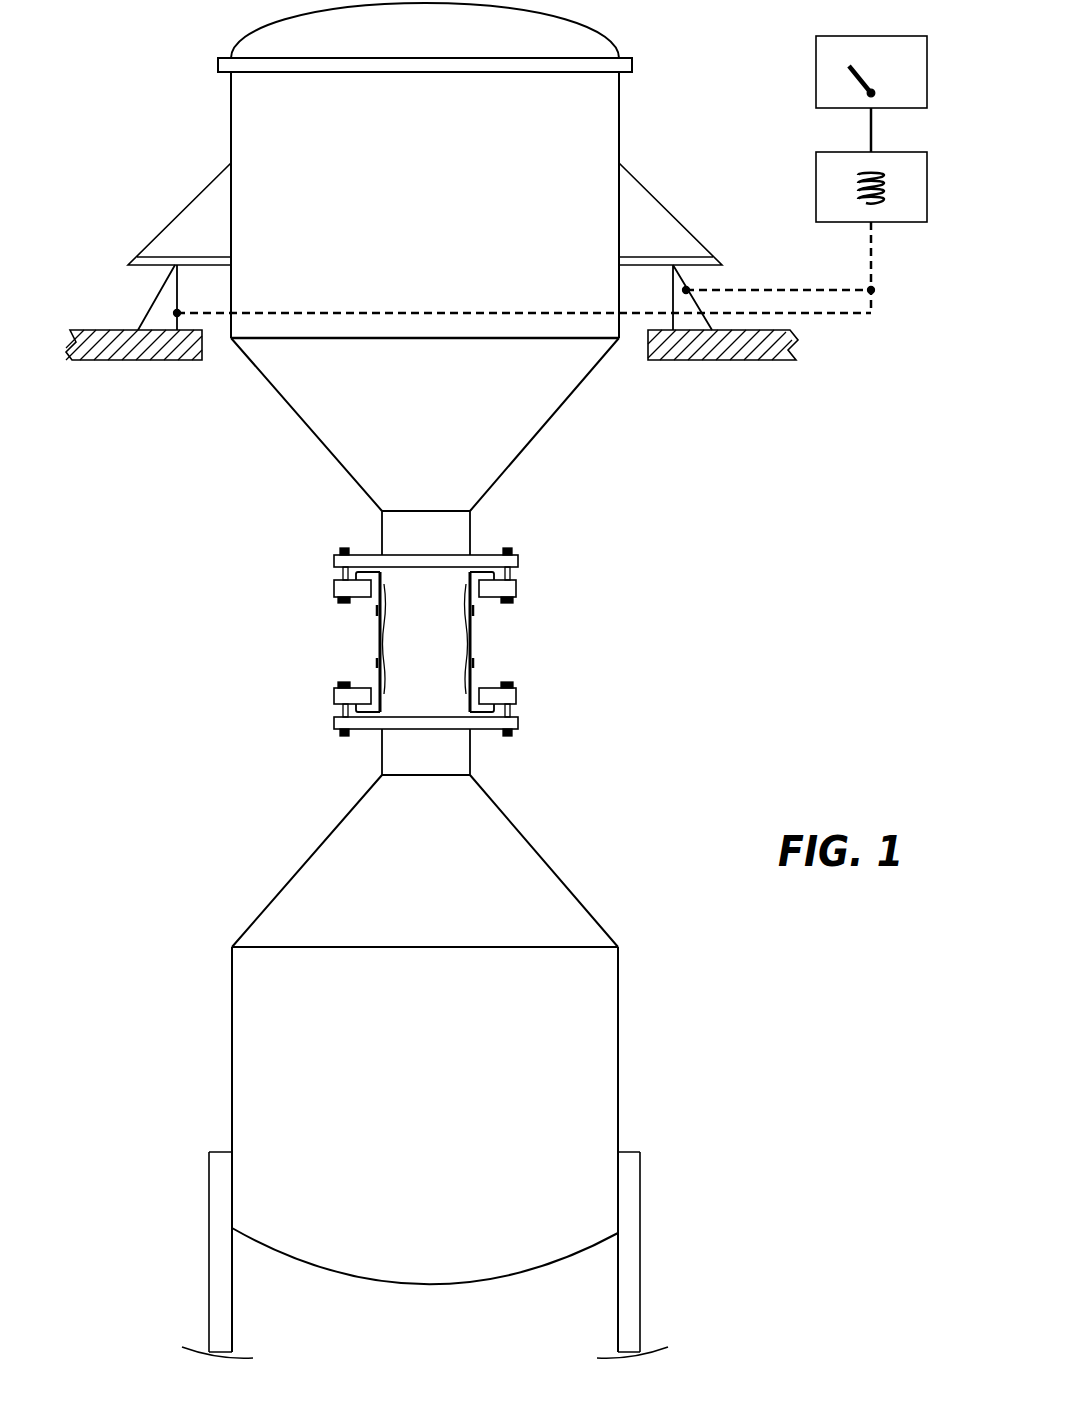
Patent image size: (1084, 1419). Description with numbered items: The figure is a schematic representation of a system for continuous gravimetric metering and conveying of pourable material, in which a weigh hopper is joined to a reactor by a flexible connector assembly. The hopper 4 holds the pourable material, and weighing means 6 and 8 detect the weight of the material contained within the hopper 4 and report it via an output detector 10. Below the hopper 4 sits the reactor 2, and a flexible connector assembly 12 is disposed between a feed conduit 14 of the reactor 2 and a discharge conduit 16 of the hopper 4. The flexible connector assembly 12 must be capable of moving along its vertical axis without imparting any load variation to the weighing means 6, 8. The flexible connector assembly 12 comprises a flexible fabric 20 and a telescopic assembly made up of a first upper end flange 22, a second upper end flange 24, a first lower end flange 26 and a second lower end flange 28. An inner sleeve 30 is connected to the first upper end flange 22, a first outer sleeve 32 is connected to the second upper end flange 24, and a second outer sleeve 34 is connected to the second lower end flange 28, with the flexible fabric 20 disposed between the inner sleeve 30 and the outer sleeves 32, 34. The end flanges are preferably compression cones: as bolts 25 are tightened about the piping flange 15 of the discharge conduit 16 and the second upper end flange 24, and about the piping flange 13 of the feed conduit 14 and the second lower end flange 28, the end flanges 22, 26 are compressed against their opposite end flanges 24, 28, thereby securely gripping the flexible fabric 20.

The reactor 2 is at (627, 1053).
The hopper 4 is at (231, 103).
The weighing means 6 is at (155, 298).
The weighing means 8 is at (673, 296).
The output detector 10 is at (893, 36).
The flexible connector assembly 12 is at (452, 654).
The piping flange 13 is at (362, 735).
The feed conduit 14 is at (444, 750).
The piping flange 15 is at (367, 552).
The discharge conduit 16 is at (449, 546).
The flexible fabric 20 is at (470, 660).
The first upper end flange 22 is at (470, 582).
The second upper end flange 24 is at (334, 590).
The bolts 25 is at (334, 572).
The first lower end flange 26 is at (470, 706).
The second lower end flange 28 is at (334, 698).
The inner sleeve 30 is at (470, 638).
The first outer sleeve 32 is at (376, 612).
The second outer sleeve 34 is at (376, 663).